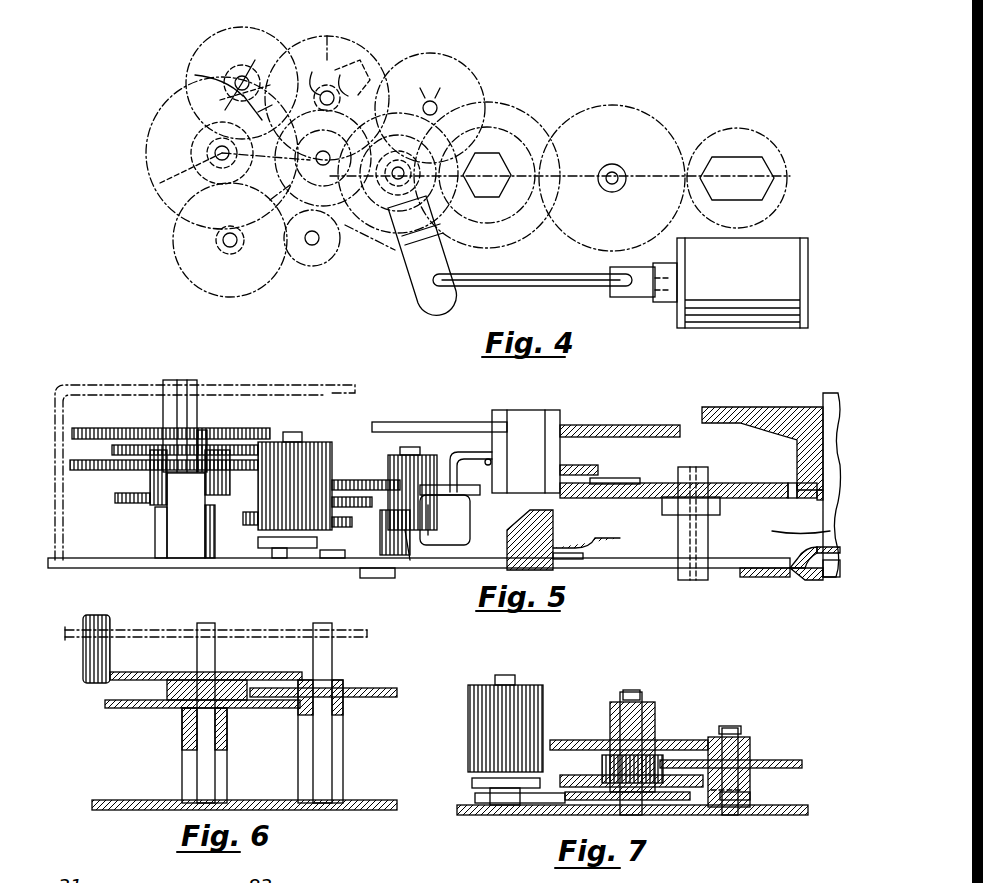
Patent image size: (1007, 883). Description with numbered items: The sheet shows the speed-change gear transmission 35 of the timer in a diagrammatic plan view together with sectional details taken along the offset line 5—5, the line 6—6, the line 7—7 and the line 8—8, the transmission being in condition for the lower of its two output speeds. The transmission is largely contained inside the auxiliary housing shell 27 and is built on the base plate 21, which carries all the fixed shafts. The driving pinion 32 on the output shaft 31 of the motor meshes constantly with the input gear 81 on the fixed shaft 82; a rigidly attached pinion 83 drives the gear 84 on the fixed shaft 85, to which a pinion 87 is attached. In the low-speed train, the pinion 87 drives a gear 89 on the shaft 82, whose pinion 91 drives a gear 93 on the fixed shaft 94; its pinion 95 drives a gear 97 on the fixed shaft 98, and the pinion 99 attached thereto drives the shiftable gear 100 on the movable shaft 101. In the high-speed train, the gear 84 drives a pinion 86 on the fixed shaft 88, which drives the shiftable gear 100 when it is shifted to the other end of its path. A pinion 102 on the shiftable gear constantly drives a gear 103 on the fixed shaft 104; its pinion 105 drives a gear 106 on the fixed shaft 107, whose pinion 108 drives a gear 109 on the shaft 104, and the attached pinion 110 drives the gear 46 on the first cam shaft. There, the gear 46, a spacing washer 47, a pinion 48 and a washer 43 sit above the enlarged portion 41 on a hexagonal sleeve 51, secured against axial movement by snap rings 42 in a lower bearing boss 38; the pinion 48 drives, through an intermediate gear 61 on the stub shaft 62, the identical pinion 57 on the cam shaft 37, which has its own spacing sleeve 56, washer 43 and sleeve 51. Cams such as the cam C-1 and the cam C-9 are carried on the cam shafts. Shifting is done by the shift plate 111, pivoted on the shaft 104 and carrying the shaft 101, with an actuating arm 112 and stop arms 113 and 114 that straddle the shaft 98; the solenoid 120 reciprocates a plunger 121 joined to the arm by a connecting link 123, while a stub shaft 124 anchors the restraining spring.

In FIG. 4, the offset line 5— 5 is at (472, 237).
In FIG. 4, the line 6— 6 is at (233, 313).
In FIG. 4, the line 7— 7 is at (340, 293).
In FIG. 4, the line 8— 8 is at (215, 157).
In FIG. 5, the base plate 21 is at (124, 568).
In FIG. 6, the base plate 21 is at (360, 800).
In FIG. 7, the base plate 21 is at (785, 816).
In FIG. 5, the auxiliary housing shell 27 is at (110, 383).
In FIG. 6, the auxiliary housing shell 27 is at (160, 628).
In FIG. 6, the output shaft 31 is at (85, 620).
In FIG. 4, the driving pinion 32 is at (236, 78).
In FIG. 6, the driving pinion 32 is at (85, 675).
In FIG. 4, the transmission 35 is at (170, 62).
In FIG. 5, the transmission 35 is at (357, 440).
In FIG. 6, the transmission 35 is at (356, 677).
In FIG. 7, the transmission 35 is at (597, 714).
In FIG. 5, the cam shaft 37 is at (834, 580).
In FIG. 5, the lower bearing boss 38 is at (790, 574).
In FIG. 5, the enlarged portion 41 is at (786, 531).
In FIG. 5, the snap ring 42 is at (810, 585).
In FIG. 5, the washer 43 is at (533, 492).
In FIG. 4, the gear 46 is at (530, 100).
In FIG. 5, the gear 46 is at (610, 470).
In FIG. 5, the spacing washer 47 is at (585, 492).
In FIG. 4, the pinion 48 is at (520, 112).
In FIG. 5, the pinion 48 is at (595, 500).
In FIG. 4, the sleeve 51 is at (484, 200).
In FIG. 5, the sleeve 51 is at (540, 412).
In FIG. 5, the spacing sleeve 56 is at (800, 465).
In FIG. 4, the pinion 57 is at (755, 124).
In FIG. 5, the pinion 57 is at (795, 500).
In FIG. 4, the intermediate gear 61 is at (650, 115).
In FIG. 5, the intermediate gear 61 is at (742, 480).
In FIG. 4, the stub shaft 62 is at (616, 172).
In FIG. 5, the stub shaft 62 is at (680, 572).
In FIG. 4, the gear 81 is at (146, 143).
In FIG. 5, the gear 81 is at (112, 427).
In FIG. 6, the gear 81 is at (118, 672).
In FIG. 4, the fixed shaft 82 is at (198, 156).
In FIG. 5, the fixed shaft 82 is at (164, 380).
In FIG. 6, the fixed shaft 82 is at (214, 624).
In FIG. 4, the pinion 83 is at (152, 170).
In FIG. 6, the pinion 83 is at (160, 700).
In FIG. 4, the gear 84 is at (175, 228).
In FIG. 5, the gear 84 is at (111, 446).
In FIG. 6, the gear 84 is at (398, 689).
In FIG. 4, the fixed shaft 85 is at (218, 249).
In FIG. 5, the fixed shaft 85 is at (190, 382).
In FIG. 6, the fixed shaft 85 is at (314, 625).
In FIG. 4, the pinion 86 is at (306, 265).
In FIG. 5, the pinion 86 is at (318, 440).
In FIG. 7, the pinion 86 is at (540, 684).
In FIG. 4, the pinion 87 is at (180, 286).
In FIG. 6, the pinion 87 is at (345, 715).
In FIG. 4, the fixed shaft 88 is at (300, 236).
In FIG. 5, the fixed shaft 88 is at (290, 432).
In FIG. 7, the fixed shaft 88 is at (508, 815).
In FIG. 5, the gear 89 is at (110, 470).
In FIG. 6, the gear 89 is at (108, 710).
In FIG. 4, the pinion 91 is at (191, 177).
In FIG. 5, the pinion 91 is at (155, 510).
In FIG. 6, the pinion 91 is at (230, 745).
In FIG. 4, the gear 93 is at (195, 131).
In FIG. 5, the gear 93 is at (114, 503).
In FIG. 4, the fixed shaft 94 is at (222, 100).
In FIG. 4, the pinion 95 is at (193, 75).
In FIG. 4, the gear 97 is at (302, 40).
In FIG. 5, the gear 97 is at (365, 482).
In FIG. 4, the fixed shaft 98 is at (325, 79).
In FIG. 4, the pinion 99 is at (341, 32).
In FIG. 4, the shiftable gear 100 is at (259, 201).
In FIG. 5, the shiftable gear 100 is at (242, 530).
In FIG. 4, the movable shaft 101 is at (308, 158).
In FIG. 4, the pinion 102 is at (312, 200).
In FIG. 4, the gear 103 is at (385, 250).
In FIG. 5, the gear 103 is at (412, 560).
In FIG. 7, the gear 103 is at (752, 780).
In FIG. 4, the fixed shaft 104 is at (387, 183).
In FIG. 5, the fixed shaft 104 is at (408, 447).
In FIG. 7, the fixed shaft 104 is at (645, 696).
In FIG. 4, the pinion 105 is at (398, 182).
In FIG. 5, the pinion 105 is at (412, 530).
In FIG. 7, the pinion 105 is at (601, 766).
In FIG. 4, the gear 106 is at (486, 66).
In FIG. 7, the gear 106 is at (802, 762).
In FIG. 4, the fixed shaft 107 is at (430, 108).
In FIG. 7, the fixed shaft 107 is at (738, 728).
In FIG. 4, the pinion 108 is at (482, 90).
In FIG. 7, the pinion 108 is at (750, 742).
In FIG. 4, the gear 109 is at (422, 255).
In FIG. 5, the gear 109 is at (418, 510).
In FIG. 7, the gear 109 is at (590, 730).
In FIG. 4, the pinion 110 is at (398, 173).
In FIG. 5, the pinion 110 is at (388, 460).
In FIG. 7, the pinion 110 is at (656, 712).
In FIG. 5, the shift plate 111 is at (333, 568).
In FIG. 7, the shift plate 111 is at (545, 803).
In FIG. 4, the actuating arm 112 is at (438, 300).
In FIG. 5, the actuating arm 112 is at (488, 500).
In FIG. 4, the stop arm 113 is at (360, 50).
In FIG. 4, the stop arm 114 is at (251, 111).
In FIG. 4, the solenoid 120 is at (725, 328).
In FIG. 4, the plunger 121 is at (620, 300).
In FIG. 4, the connecting link 123 is at (530, 292).
In FIG. 5, the connecting link 123 is at (468, 452).
In FIG. 5, the stub shaft 124 is at (375, 578).
In FIG. 5, the cam C-1 is at (645, 424).
In FIG. 5, the cam C-9 is at (710, 407).